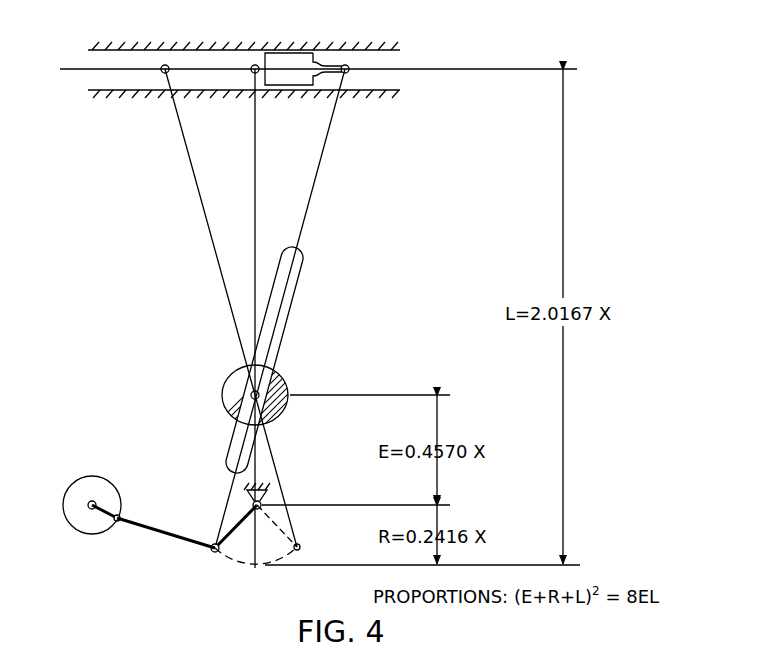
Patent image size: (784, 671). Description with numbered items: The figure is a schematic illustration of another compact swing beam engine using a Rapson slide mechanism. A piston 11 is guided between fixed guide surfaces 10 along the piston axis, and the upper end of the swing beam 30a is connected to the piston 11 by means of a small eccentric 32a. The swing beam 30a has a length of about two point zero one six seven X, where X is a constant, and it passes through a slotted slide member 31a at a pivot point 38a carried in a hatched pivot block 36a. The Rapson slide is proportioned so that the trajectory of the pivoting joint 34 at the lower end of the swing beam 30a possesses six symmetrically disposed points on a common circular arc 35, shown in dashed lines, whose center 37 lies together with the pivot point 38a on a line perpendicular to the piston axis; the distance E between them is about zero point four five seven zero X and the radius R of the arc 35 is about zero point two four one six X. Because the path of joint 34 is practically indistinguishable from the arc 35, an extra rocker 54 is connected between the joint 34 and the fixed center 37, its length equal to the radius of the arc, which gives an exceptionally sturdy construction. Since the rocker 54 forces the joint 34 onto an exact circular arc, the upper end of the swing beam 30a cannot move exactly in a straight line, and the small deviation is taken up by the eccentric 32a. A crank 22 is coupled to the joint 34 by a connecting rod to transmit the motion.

The fixed guide 10 is at (196, 46).
The piston 11 is at (298, 56).
The eccentric 32a is at (349, 68).
The swing beam 30a is at (325, 153).
The slotted arm 31a is at (300, 279).
The pivot point 38a is at (228, 383).
The hatched disc 36a is at (287, 385).
The center of rotation of arc 37 is at (261, 503).
The rocker 54 is at (236, 523).
The pivoting joint 34 is at (212, 551).
The circular arc 35 is at (233, 562).
The crank 22 is at (80, 520).